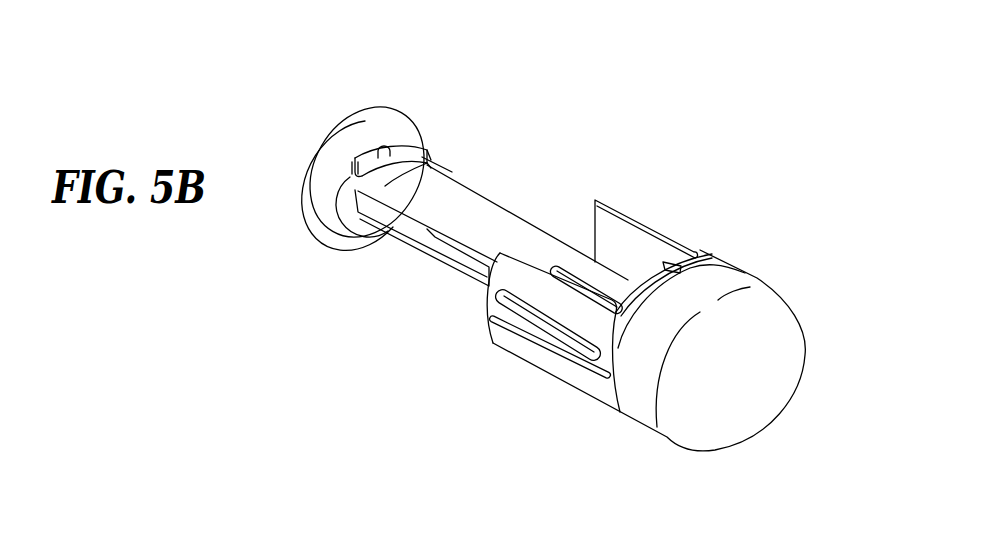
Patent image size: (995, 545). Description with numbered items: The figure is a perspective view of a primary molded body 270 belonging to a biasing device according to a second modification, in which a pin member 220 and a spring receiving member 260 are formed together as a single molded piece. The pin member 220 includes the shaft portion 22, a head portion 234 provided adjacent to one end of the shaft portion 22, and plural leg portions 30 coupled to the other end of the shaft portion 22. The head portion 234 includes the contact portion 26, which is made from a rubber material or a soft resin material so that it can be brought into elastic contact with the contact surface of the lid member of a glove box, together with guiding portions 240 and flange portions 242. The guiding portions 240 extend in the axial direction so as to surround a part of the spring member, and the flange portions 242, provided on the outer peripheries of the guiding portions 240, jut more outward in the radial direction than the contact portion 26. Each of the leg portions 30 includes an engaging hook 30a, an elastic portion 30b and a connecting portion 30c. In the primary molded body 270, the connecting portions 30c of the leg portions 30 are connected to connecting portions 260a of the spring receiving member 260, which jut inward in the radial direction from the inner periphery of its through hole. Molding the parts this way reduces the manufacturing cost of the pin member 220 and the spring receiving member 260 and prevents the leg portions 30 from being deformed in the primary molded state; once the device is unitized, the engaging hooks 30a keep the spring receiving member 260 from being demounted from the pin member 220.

The shaft portion 22 is at (517, 228).
The contact portion 26 is at (787, 318).
The leg portions 30 is at (403, 155).
The engaging hook 30a is at (428, 162).
The elastic portion 30b is at (465, 198).
The connecting portion 30c is at (355, 170).
The pin member 220 is at (463, 228).
The head portion 234 is at (631, 352).
The guiding portions 240 is at (627, 212).
The flange portions 242 is at (668, 261).
The spring receiving member 260 is at (351, 127).
The connecting portions 260a is at (376, 148).
The primary molded body 270 is at (447, 410).